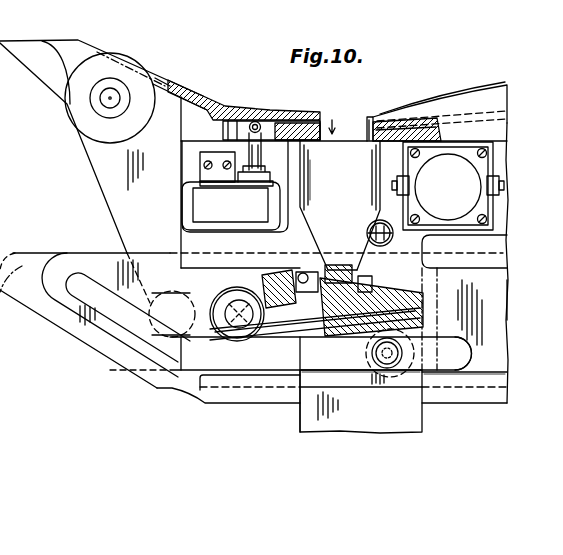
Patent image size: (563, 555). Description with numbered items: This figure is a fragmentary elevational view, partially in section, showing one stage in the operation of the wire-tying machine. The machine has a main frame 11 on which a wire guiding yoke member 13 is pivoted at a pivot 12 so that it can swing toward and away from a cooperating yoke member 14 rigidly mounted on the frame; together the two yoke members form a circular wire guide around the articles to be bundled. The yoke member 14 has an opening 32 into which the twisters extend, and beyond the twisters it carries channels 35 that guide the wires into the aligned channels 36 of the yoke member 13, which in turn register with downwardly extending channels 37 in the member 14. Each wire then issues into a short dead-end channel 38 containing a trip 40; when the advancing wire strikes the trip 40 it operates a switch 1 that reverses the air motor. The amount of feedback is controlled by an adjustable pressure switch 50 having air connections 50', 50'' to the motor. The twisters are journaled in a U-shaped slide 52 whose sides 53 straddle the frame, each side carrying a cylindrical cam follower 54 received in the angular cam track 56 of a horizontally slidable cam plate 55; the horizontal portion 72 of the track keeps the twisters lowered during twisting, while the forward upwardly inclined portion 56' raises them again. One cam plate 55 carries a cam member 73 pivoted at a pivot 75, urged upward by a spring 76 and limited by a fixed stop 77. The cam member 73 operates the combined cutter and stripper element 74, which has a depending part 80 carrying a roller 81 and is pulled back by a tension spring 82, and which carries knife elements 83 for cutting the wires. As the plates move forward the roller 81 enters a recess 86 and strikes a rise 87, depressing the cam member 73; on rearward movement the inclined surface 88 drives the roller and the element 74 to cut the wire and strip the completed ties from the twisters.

The switch 1 is at (205, 201).
The main frame 11 is at (223, 392).
The pivot 12 is at (116, 101).
The wire guiding yoke member 13 is at (160, 80).
The cooperating yoke member 14 is at (463, 98).
The opening 32 is at (332, 115).
The channels 35 is at (188, 95).
The channels 36 is at (124, 62).
The channels 37 is at (437, 118).
The dead-end channel 38 is at (286, 118).
The trip 40 is at (255, 121).
The adjustable pressure switch 50 is at (448, 186).
The air connection 50' is at (423, 171).
The air connection 50'' is at (515, 171).
The slide 52 is at (436, 418).
The sides 53 is at (300, 420).
The cam follower 54 is at (389, 360).
The cam plate 55 is at (500, 300).
The cam track 56 is at (473, 353).
The forward upwardly inclined portion 56' is at (116, 304).
The horizontal portion 72 is at (355, 366).
The cam member 73 is at (286, 331).
The combined cutter and stripper element 74 is at (350, 148).
The pivot 75 is at (236, 323).
The spring 76 is at (237, 300).
The fixed stop 77 is at (383, 263).
The depending part 80 is at (358, 227).
The roller 81 is at (339, 272).
The tension spring 82 is at (394, 240).
The knife element 83 is at (371, 118).
The recess 86 is at (288, 268).
The rise 87 is at (310, 272).
The inclined surface 88 is at (370, 302).